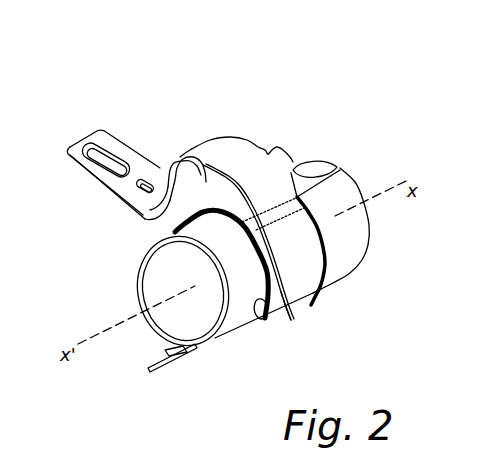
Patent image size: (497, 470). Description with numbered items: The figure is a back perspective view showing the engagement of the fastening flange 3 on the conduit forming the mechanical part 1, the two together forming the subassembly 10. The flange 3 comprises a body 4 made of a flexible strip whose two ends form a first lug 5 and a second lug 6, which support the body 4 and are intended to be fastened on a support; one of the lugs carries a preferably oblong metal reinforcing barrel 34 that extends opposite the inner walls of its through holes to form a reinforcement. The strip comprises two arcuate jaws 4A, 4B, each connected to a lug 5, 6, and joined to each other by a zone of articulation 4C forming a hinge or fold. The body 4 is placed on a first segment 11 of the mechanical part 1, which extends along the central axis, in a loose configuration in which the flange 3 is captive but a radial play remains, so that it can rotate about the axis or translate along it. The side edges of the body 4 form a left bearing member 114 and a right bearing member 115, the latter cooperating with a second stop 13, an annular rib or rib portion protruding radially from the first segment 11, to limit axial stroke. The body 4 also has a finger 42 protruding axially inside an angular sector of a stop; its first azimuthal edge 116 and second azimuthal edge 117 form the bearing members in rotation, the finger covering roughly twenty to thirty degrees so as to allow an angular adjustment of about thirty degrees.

The mechanical part 1 is at (346, 282).
The subassembly 10 is at (340, 90).
The first segment 11 is at (361, 252).
The fastening flange 3 is at (235, 137).
The body 4 is at (312, 302).
The arcuate jaw 4A is at (255, 157).
The arcuate jaw 4B is at (287, 311).
The zone of articulation 4C is at (300, 196).
The first lug 5 is at (138, 170).
The second lug 6 is at (163, 367).
The second stop 13 is at (255, 323).
The reinforcing barrel 34 is at (170, 348).
The finger 42 is at (283, 160).
The left bearing member 114 is at (242, 131).
The right bearing member 115 is at (183, 157).
The first azimuthal edge 116 is at (280, 150).
The second azimuthal edge 117 is at (300, 190).